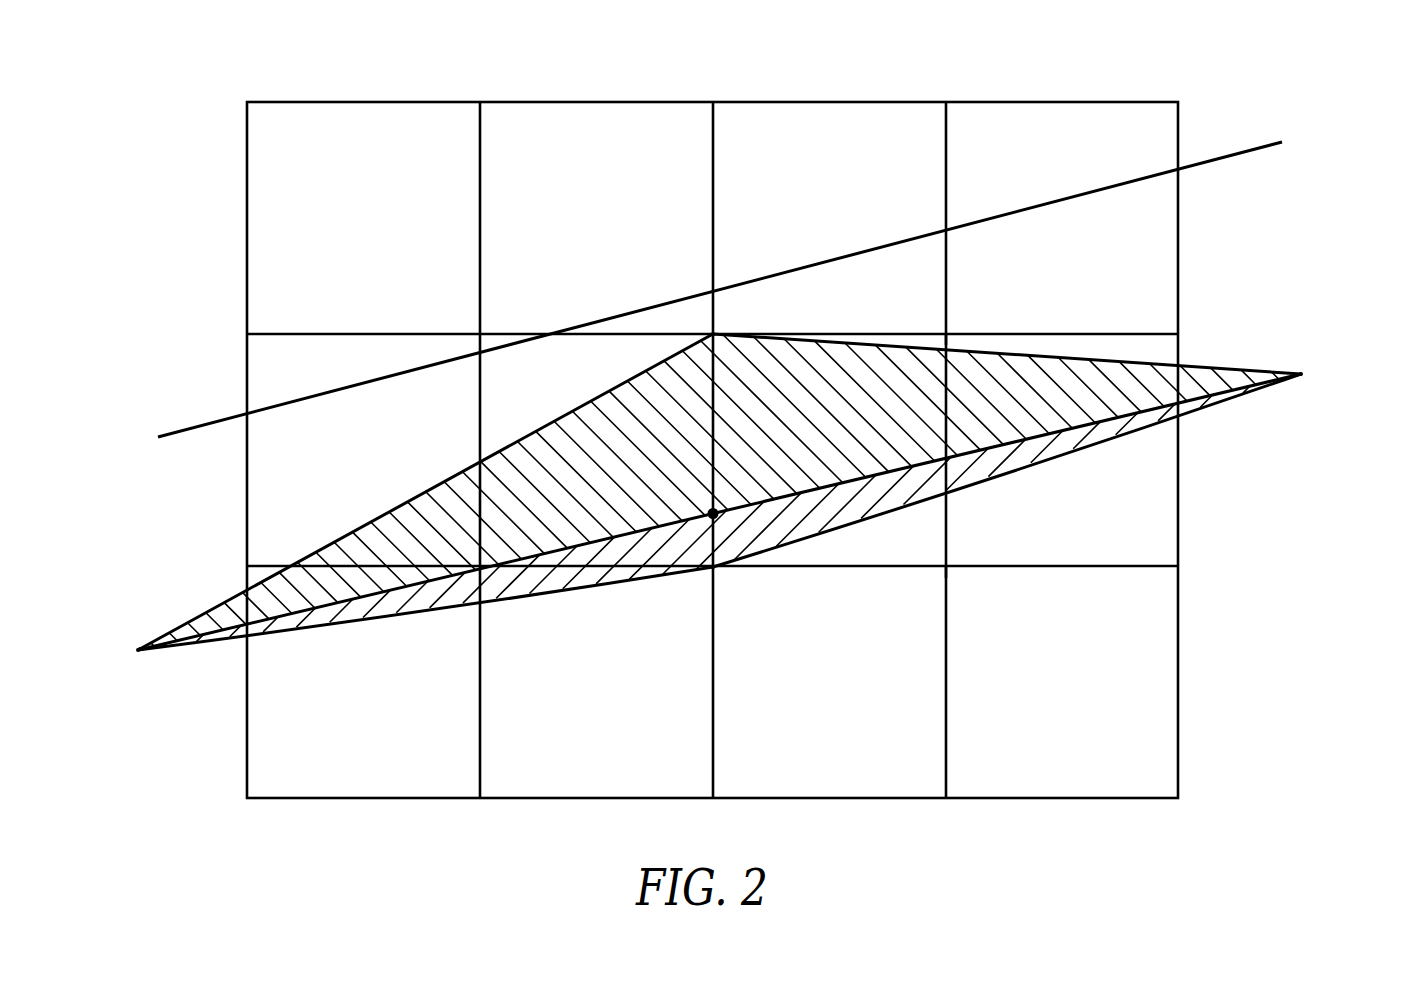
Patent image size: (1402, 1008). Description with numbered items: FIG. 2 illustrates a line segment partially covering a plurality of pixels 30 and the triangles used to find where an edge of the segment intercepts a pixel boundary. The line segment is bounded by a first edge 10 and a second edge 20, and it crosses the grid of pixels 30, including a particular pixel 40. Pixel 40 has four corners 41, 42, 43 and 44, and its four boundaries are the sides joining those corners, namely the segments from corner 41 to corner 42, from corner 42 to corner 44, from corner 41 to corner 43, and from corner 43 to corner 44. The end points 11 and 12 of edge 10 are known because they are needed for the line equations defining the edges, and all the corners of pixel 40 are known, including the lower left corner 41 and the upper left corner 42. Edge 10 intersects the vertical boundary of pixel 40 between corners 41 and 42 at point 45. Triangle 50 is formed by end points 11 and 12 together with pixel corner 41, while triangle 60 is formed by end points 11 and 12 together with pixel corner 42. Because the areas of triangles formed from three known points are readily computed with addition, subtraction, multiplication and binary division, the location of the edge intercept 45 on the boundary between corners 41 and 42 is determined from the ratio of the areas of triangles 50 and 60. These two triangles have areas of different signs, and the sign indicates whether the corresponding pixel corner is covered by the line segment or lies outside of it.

The first edge 10 is at (137, 652).
The end point 11 is at (142, 648).
The end point 12 is at (1302, 374).
The second edge 20 is at (214, 420).
The plurality of pixels 30 is at (360, 102).
The pixel 40 is at (899, 291).
The lower left corner 41 is at (713, 567).
The upper left corner 42 is at (713, 334).
The pixel corner 43 is at (946, 567).
The pixel corner 44 is at (946, 334).
The edge intercept point 45 is at (717, 516).
The triangle 50 is at (522, 583).
The triangle 60 is at (572, 427).